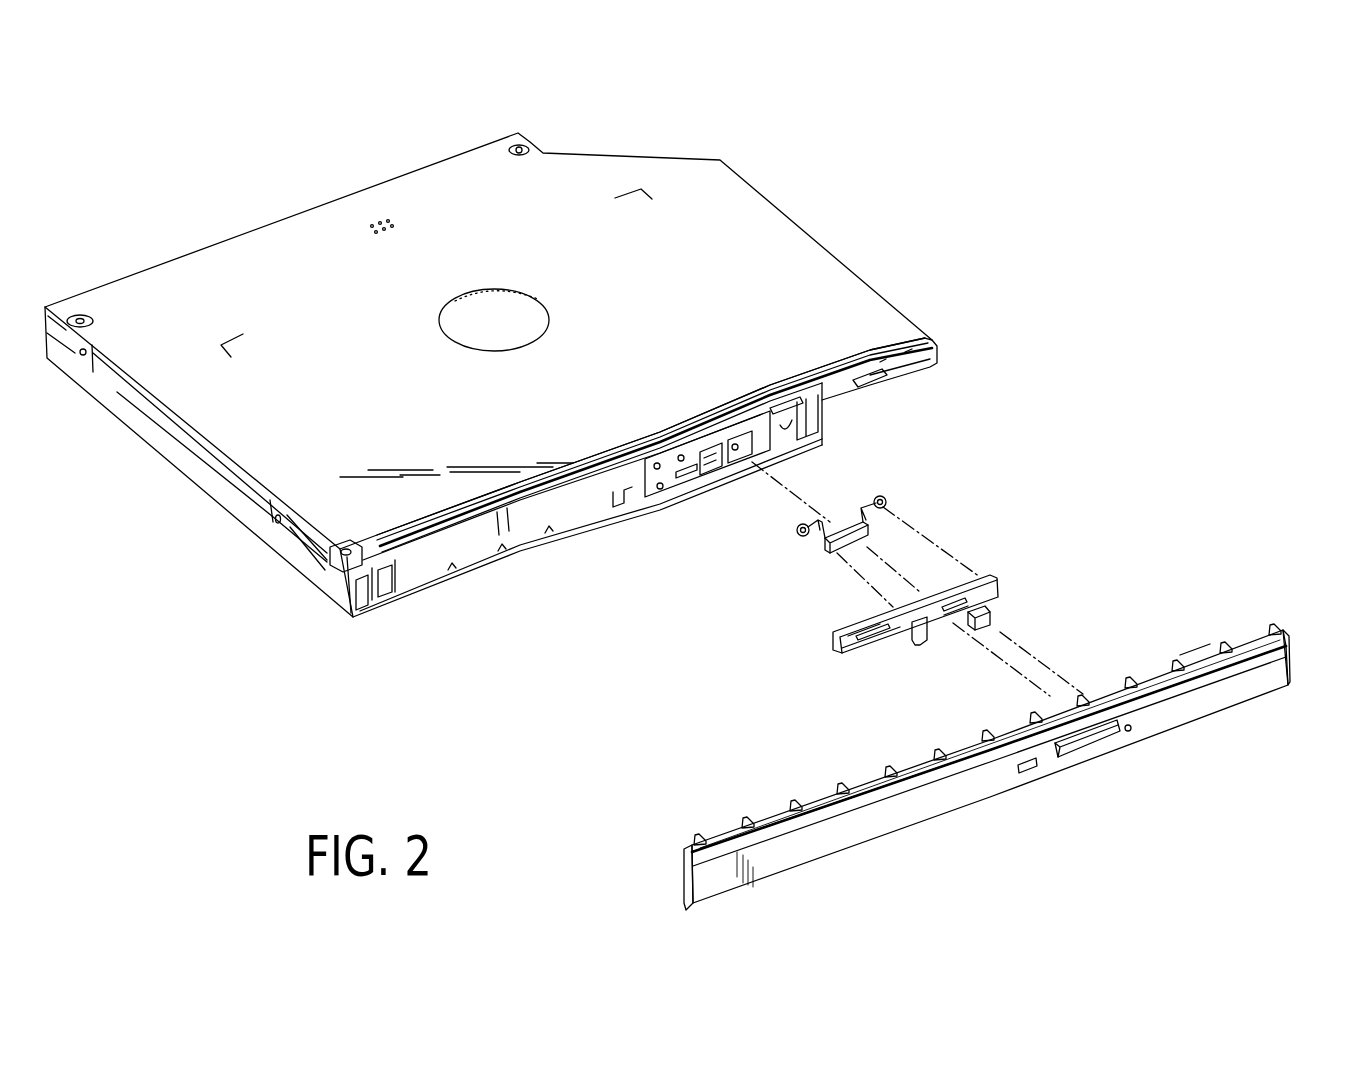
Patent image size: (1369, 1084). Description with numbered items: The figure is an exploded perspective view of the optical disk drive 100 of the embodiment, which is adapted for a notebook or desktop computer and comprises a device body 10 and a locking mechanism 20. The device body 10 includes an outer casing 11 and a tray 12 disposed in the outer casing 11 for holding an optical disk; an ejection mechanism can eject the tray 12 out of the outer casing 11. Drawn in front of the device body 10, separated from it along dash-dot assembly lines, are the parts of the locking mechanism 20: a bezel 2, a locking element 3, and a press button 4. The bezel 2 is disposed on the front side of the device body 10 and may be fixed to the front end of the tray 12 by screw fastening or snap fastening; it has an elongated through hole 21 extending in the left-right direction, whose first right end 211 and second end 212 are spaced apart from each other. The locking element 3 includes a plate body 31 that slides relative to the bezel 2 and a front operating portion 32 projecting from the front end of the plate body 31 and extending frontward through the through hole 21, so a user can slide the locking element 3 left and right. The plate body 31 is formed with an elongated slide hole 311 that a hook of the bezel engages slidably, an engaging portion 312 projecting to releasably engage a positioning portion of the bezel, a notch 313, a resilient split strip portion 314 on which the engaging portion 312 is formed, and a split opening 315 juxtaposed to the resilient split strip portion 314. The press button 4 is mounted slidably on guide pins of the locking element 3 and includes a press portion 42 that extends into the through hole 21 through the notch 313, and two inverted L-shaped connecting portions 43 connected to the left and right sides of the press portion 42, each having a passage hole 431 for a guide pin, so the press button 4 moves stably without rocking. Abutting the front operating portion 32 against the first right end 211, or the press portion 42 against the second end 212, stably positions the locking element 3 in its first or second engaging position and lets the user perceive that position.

The optical disk drive 100 is at (232, 214).
The device body 10 is at (874, 230).
The outer casing 11 is at (772, 237).
The tray 12 is at (422, 580).
The locking mechanism 20 is at (1040, 509).
The press button 4 is at (910, 491).
The press portion 42 is at (860, 538).
The connecting portion 43 is at (874, 500).
The passage hole 431 is at (890, 494).
The locking element 3 is at (1018, 580).
The plate body 31 is at (978, 592).
The slide hole 311 is at (954, 622).
The engaging portion 312 is at (870, 636).
The notch 313 is at (936, 632).
The resilient split strip portion 314 is at (855, 641).
The split opening 315 is at (842, 628).
The front operating portion 32 is at (990, 618).
The bezel 2 is at (1300, 658).
The through hole 21 is at (1083, 755).
The first right end 211 is at (1134, 729).
The second end 212 is at (1055, 746).